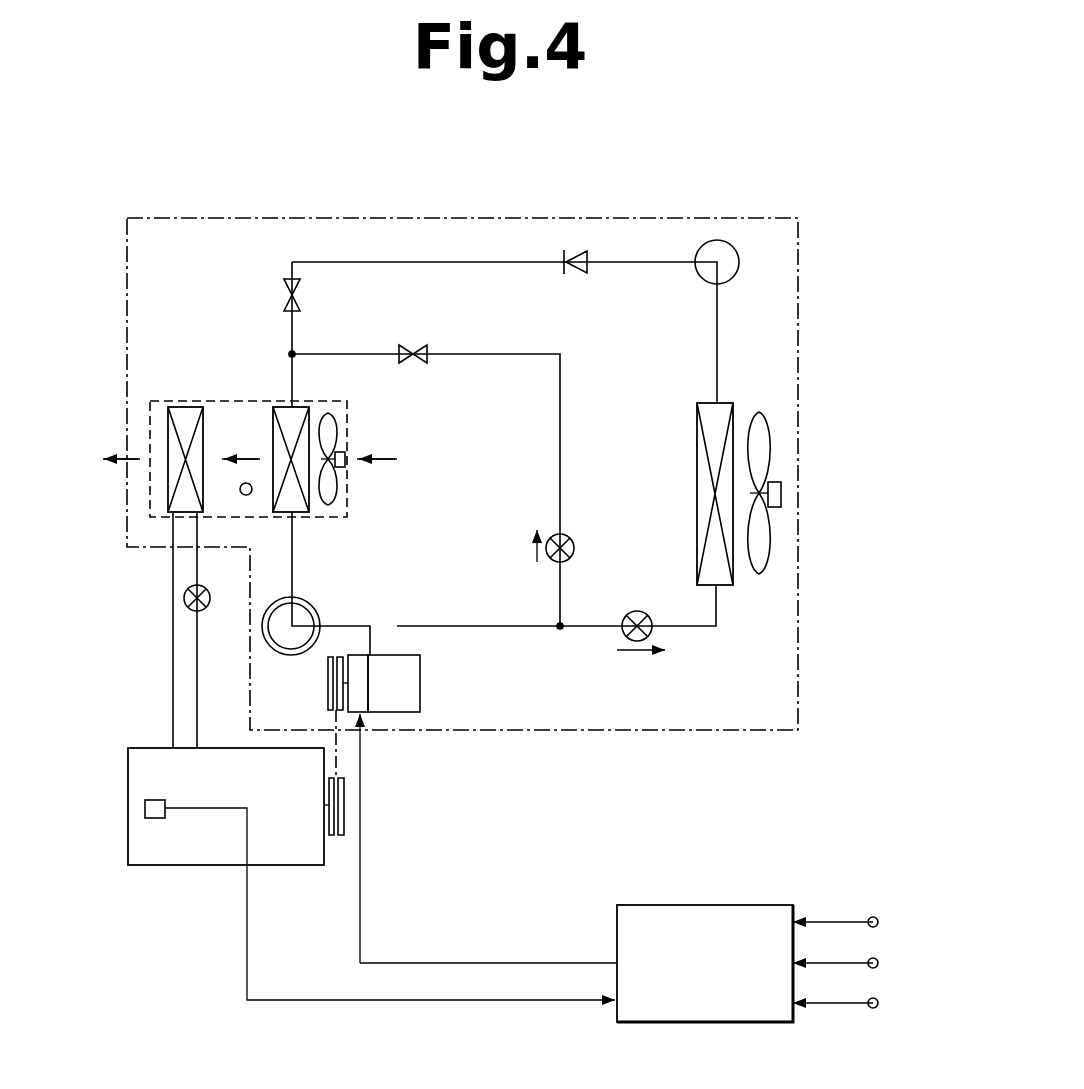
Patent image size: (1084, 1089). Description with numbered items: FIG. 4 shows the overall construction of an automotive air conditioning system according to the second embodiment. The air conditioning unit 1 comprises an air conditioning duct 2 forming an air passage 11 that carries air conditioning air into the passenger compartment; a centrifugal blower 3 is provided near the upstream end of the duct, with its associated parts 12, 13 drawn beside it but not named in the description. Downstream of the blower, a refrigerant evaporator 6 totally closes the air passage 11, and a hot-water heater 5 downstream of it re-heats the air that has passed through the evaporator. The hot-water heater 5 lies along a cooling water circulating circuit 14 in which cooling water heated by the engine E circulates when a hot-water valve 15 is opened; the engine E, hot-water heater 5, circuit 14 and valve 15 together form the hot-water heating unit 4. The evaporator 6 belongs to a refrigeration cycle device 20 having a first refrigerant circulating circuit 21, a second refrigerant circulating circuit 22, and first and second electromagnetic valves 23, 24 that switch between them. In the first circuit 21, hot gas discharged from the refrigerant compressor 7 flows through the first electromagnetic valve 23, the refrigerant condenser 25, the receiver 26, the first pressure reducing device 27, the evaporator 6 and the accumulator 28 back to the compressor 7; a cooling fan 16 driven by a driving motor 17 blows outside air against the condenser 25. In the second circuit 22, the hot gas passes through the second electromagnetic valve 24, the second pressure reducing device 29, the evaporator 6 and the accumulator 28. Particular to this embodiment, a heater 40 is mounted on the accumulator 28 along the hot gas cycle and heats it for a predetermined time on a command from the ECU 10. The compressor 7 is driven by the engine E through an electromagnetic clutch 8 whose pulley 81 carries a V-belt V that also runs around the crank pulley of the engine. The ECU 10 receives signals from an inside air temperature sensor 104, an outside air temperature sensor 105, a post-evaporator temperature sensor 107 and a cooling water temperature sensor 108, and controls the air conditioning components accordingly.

The air conditioning unit 1 is at (190, 218).
The air conditioning duct 2 is at (212, 401).
The centrifugal blower 3 is at (348, 419).
The hot-water heating unit 4 is at (156, 661).
The hot-water heater 5 is at (168, 483).
The refrigerant evaporator 6 is at (290, 407).
The refrigerant compressor 7 is at (420, 677).
The electromagnetic clutch 8 is at (360, 655).
The air conditioning control unit (ECU) 10 is at (655, 905).
The air passage 11 is at (245, 415).
The blower motor 12 is at (345, 452).
The blower fan 13 is at (331, 500).
The cooling water circulating circuit 14 is at (172, 643).
The hot-water valve 15 is at (184, 598).
The cooling fan 16 is at (759, 412).
The driving motor 17 is at (781, 493).
The refrigeration cycle device 20 is at (412, 260).
The first refrigerant circulating circuit 21 is at (485, 262).
The second refrigerant circulating circuit 22 is at (520, 354).
The first electromagnetic valve 23 is at (637, 611).
The second electromagnetic valve 24 is at (567, 540).
The refrigerant condenser 25 is at (705, 403).
The receiver 26 is at (705, 275).
The first pressure reducing device 27 is at (299, 292).
The accumulator 28 is at (304, 614).
The second pressure reducing device 29 is at (413, 345).
The heater 40 is at (265, 628).
The pulley 81 is at (328, 684).
The inside air temperature sensor 104 is at (869, 964).
The outside air temperature sensor 105 is at (869, 1004).
The post-evaporator temperature sensor 107 is at (247, 495).
The cooling water temperature sensor 108 is at (145, 809).
The engine E is at (203, 866).
The V-belt V is at (338, 757).